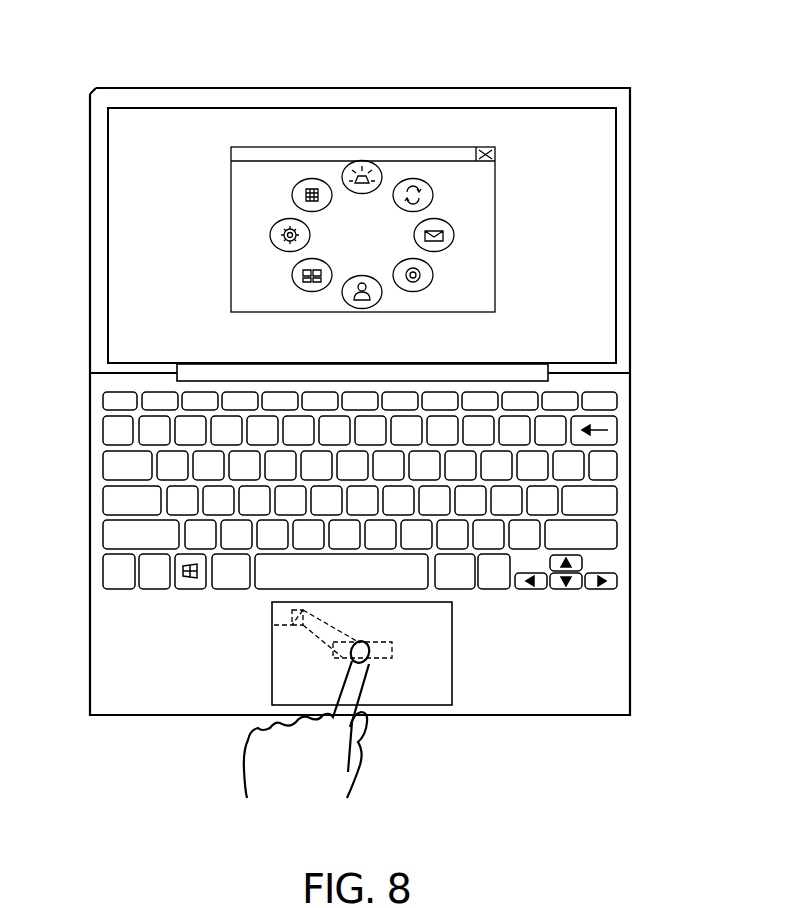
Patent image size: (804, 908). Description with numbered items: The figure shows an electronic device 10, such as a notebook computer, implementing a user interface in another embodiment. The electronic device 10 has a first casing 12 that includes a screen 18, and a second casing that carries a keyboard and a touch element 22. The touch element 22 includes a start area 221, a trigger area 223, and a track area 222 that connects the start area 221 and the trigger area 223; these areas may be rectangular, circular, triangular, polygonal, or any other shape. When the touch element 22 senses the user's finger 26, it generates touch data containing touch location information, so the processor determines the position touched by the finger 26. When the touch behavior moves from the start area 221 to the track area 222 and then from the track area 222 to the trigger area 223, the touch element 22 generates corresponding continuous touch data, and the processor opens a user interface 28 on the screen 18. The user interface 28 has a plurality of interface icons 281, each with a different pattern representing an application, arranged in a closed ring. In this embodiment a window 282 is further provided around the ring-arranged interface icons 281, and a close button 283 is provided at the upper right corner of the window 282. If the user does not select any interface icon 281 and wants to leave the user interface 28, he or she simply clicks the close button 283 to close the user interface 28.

The electronic device 10 is at (356, 400).
The first casing 12 is at (382, 234).
The screen 18 is at (391, 235).
The user interface 28 is at (384, 182).
The interface icon 281 is at (362, 123).
The window 282 is at (363, 107).
The close button 283 is at (481, 107).
The touch element 22 is at (333, 679).
The start area 221 is at (258, 614).
The track area 222 is at (287, 633).
The trigger area 223 is at (372, 699).
The finger 26 is at (287, 718).